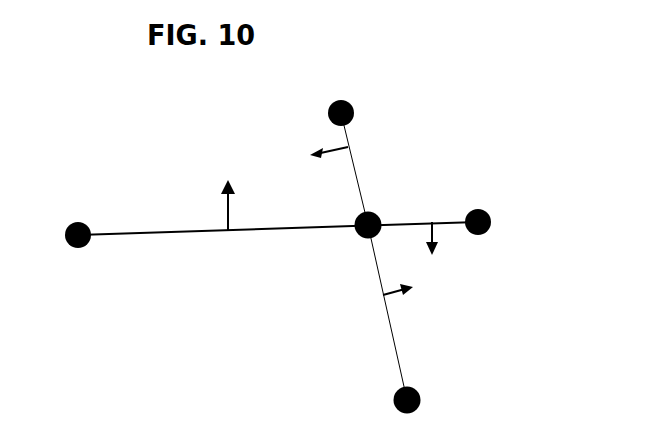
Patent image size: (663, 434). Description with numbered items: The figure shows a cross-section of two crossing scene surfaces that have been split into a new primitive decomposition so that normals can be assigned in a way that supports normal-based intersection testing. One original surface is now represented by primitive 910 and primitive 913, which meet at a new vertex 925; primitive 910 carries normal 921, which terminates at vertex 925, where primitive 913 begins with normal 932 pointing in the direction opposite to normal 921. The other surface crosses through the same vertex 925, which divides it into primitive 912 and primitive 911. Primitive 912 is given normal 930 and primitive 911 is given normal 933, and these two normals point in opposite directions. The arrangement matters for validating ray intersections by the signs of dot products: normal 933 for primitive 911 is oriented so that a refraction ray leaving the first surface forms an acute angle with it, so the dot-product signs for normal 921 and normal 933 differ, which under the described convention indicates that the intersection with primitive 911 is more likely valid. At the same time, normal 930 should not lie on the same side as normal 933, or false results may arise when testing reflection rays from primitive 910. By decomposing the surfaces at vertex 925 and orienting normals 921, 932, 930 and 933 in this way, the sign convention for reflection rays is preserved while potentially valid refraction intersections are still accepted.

The primitive 910 is at (192, 230).
The primitive 911 is at (388, 317).
The primitive 912 is at (343, 135).
The primitive 913 is at (387, 223).
The normal 921 is at (228, 203).
The vertex 925 is at (373, 238).
The normal 930 is at (332, 147).
The normal 932 is at (432, 233).
The normal 933 is at (387, 297).